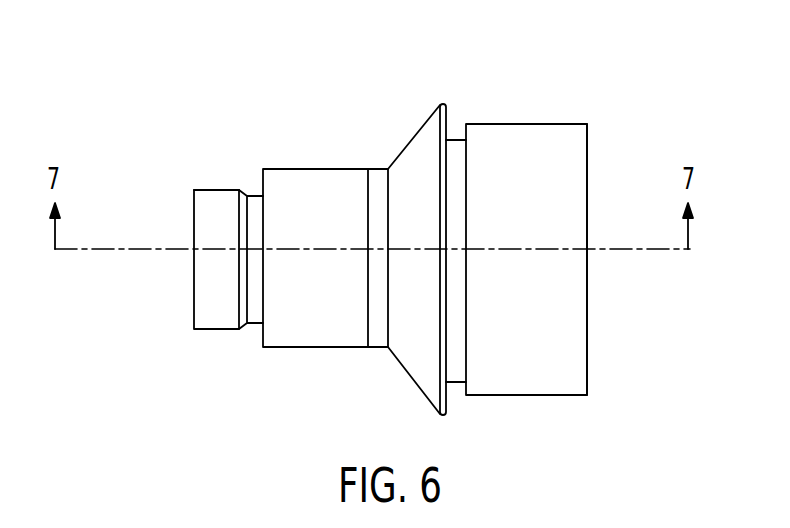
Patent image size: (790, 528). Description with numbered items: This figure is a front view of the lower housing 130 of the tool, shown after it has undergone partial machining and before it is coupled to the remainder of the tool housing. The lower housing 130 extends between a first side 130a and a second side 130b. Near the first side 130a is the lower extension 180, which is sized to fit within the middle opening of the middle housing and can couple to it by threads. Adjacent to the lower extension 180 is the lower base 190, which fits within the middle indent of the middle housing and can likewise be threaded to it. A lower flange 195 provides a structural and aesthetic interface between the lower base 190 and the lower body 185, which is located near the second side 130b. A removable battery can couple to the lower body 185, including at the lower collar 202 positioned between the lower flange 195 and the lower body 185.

The lower housing 130 is at (588, 94).
The first side 130a is at (205, 188).
The second side 130b is at (587, 343).
The lower extension 180 is at (208, 318).
The lower body 185 is at (510, 132).
The lower base 190 is at (317, 337).
The lower flange 195 is at (408, 377).
The lower collar 202 is at (453, 374).